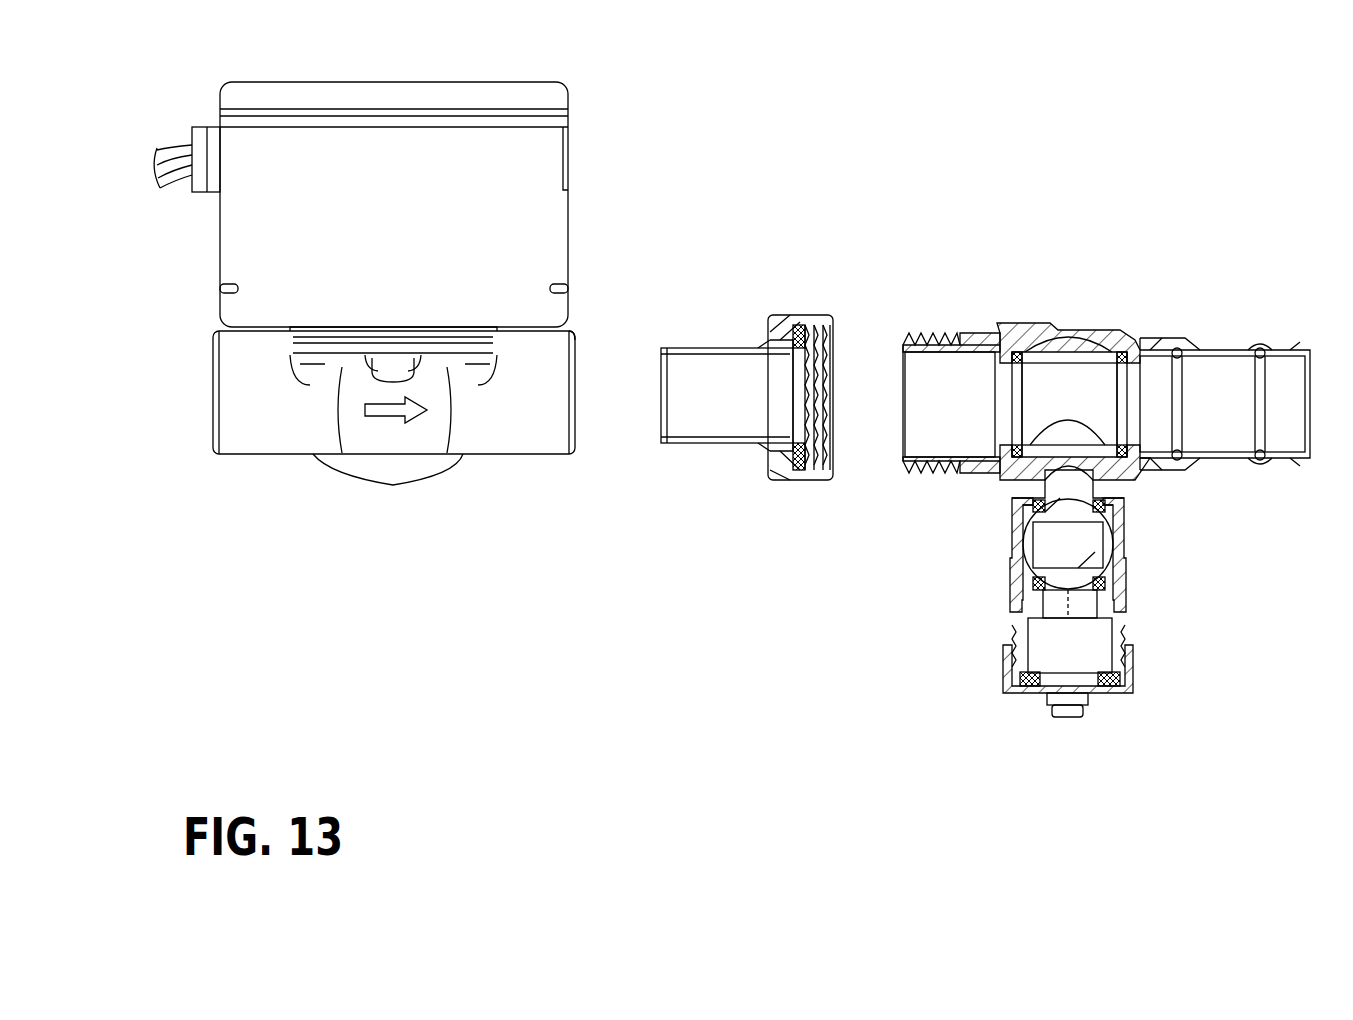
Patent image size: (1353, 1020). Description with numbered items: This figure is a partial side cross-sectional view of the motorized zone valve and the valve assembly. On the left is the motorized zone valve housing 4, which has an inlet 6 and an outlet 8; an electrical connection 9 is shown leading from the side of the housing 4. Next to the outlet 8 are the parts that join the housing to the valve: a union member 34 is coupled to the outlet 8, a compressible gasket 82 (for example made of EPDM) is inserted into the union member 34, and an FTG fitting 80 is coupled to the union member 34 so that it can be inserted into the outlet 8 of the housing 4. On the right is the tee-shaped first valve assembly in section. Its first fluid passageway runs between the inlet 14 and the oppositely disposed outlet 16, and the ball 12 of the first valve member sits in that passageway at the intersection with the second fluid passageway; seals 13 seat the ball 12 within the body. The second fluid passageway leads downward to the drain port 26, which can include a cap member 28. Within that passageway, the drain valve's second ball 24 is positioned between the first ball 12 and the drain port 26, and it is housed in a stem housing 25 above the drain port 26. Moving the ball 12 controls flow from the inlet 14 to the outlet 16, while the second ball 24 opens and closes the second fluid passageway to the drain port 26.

The motorized zone valve housing 4 is at (408, 165).
The electrical connector 9 is at (192, 135).
The inlet 6 is at (213, 405).
The outlet 8 is at (578, 340).
The fitting 80 is at (706, 348).
The union member 34 is at (777, 318).
The gasket 82 is at (800, 333).
The inlet 14 is at (928, 335).
The ball 12 is at (1080, 345).
The seal 13 is at (1018, 348).
The outlet 16 is at (1300, 352).
The stem housing 25 is at (1030, 505).
The second ball 24 is at (1085, 513).
The drain port 26 is at (1133, 633).
The cap member 28 is at (1133, 676).